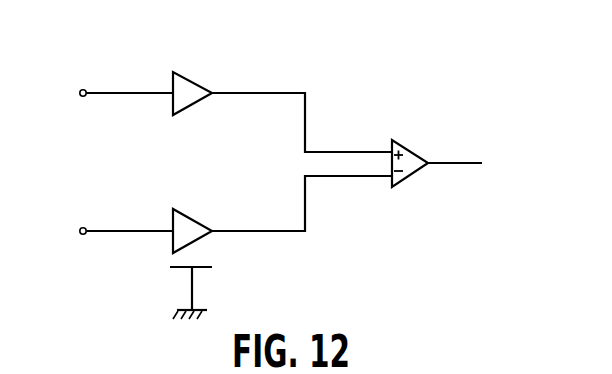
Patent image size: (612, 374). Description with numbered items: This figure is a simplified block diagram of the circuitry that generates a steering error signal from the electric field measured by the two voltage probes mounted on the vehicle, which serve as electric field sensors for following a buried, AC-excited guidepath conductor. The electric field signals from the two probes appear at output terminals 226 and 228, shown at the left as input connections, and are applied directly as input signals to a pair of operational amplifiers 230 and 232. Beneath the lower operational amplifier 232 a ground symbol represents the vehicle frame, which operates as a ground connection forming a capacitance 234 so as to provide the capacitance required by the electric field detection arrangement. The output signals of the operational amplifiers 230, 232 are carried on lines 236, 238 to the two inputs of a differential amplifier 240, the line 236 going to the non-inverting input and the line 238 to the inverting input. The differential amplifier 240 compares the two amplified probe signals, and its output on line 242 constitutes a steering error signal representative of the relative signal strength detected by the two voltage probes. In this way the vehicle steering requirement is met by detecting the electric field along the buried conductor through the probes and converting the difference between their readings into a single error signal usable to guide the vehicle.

The output terminal 226 is at (80, 90).
The output terminal 228 is at (80, 228).
The operational amplifier 230 is at (188, 77).
The operational amplifier 232 is at (195, 221).
The capacitance 234 is at (178, 270).
The line 236 is at (273, 92).
The line 238 is at (307, 221).
The differential amplifier 240 is at (412, 148).
The line 242 is at (467, 162).